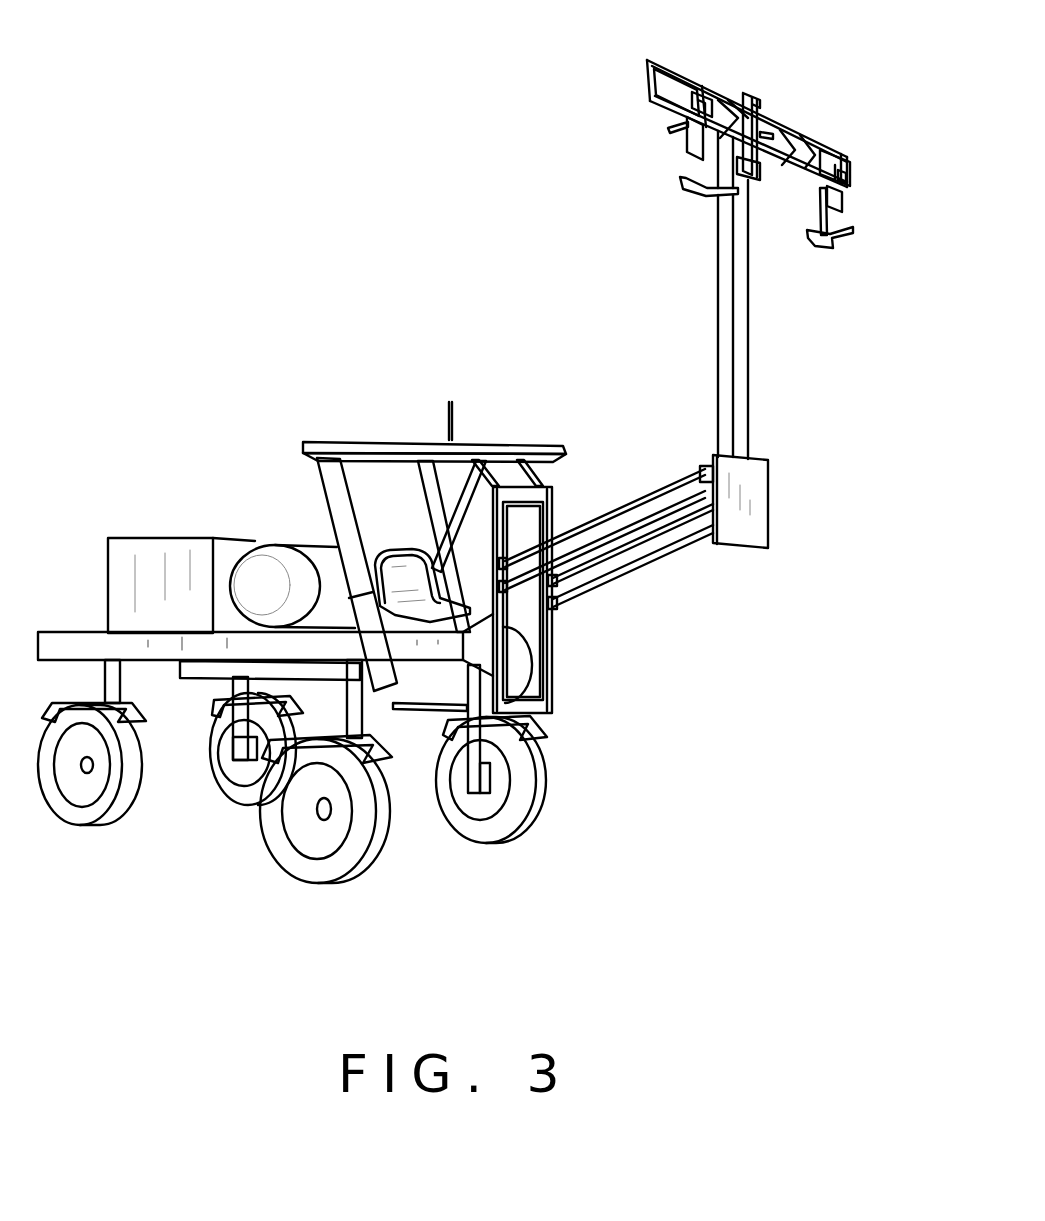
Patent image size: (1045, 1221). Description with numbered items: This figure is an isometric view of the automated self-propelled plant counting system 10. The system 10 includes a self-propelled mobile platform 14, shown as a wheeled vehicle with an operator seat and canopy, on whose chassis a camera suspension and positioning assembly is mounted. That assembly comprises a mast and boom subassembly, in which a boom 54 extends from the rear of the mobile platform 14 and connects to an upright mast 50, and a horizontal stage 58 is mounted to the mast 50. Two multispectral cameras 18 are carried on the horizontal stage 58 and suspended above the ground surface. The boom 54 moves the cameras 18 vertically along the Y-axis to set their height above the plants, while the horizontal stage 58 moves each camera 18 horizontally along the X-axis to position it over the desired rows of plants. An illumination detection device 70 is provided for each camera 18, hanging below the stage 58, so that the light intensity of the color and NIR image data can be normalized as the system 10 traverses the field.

The automated self-propelled plant counting system 10 is at (533, 146).
The self-propelled mobile platform 14 is at (250, 492).
The multispectral camera 18 is at (712, 92).
The mast 50 is at (738, 378).
The boom 54 is at (667, 492).
The horizontal stage 58 is at (775, 116).
The illumination detection device 70 is at (692, 186).